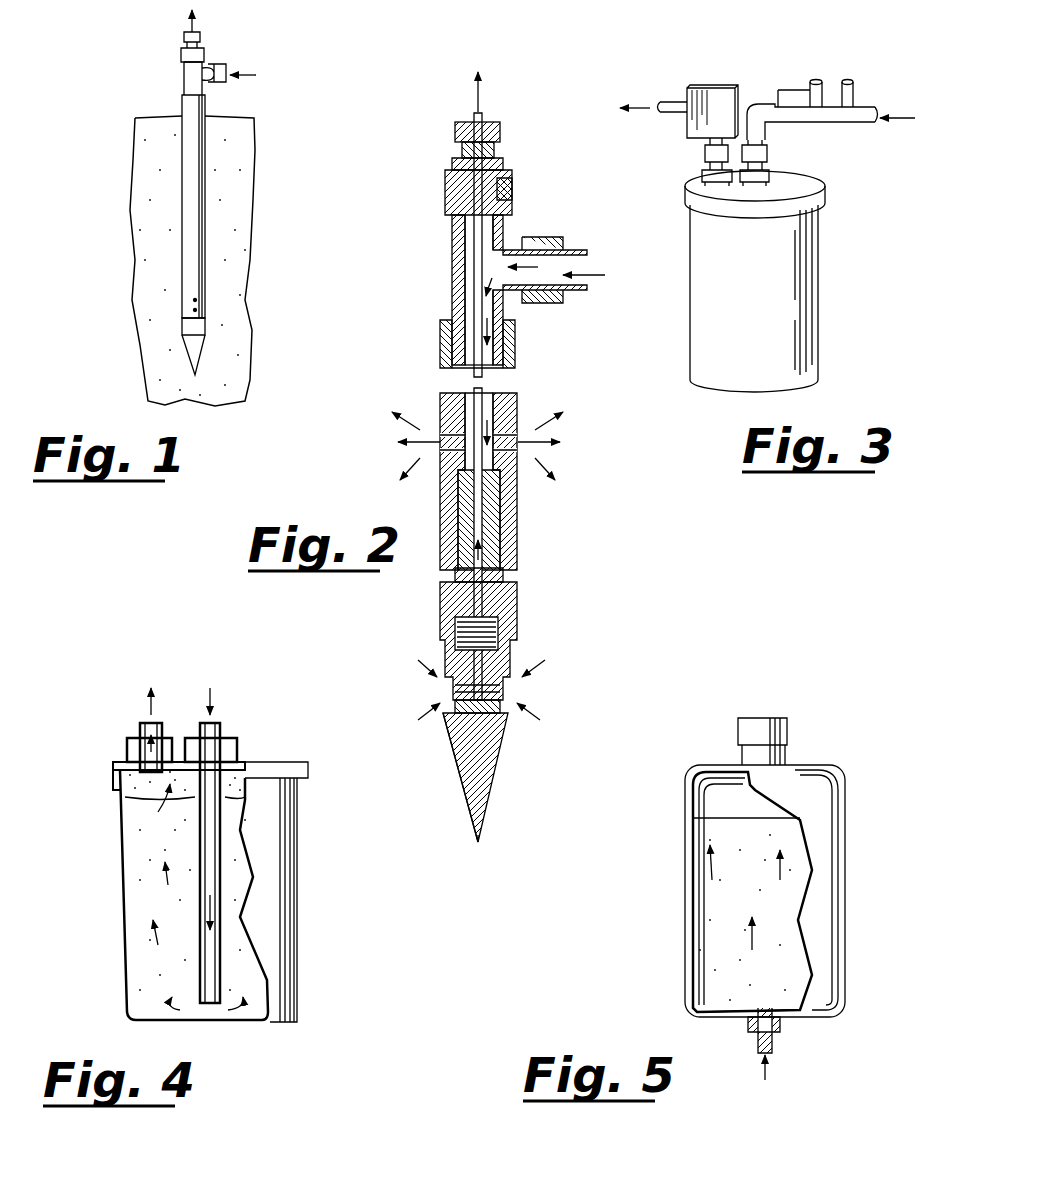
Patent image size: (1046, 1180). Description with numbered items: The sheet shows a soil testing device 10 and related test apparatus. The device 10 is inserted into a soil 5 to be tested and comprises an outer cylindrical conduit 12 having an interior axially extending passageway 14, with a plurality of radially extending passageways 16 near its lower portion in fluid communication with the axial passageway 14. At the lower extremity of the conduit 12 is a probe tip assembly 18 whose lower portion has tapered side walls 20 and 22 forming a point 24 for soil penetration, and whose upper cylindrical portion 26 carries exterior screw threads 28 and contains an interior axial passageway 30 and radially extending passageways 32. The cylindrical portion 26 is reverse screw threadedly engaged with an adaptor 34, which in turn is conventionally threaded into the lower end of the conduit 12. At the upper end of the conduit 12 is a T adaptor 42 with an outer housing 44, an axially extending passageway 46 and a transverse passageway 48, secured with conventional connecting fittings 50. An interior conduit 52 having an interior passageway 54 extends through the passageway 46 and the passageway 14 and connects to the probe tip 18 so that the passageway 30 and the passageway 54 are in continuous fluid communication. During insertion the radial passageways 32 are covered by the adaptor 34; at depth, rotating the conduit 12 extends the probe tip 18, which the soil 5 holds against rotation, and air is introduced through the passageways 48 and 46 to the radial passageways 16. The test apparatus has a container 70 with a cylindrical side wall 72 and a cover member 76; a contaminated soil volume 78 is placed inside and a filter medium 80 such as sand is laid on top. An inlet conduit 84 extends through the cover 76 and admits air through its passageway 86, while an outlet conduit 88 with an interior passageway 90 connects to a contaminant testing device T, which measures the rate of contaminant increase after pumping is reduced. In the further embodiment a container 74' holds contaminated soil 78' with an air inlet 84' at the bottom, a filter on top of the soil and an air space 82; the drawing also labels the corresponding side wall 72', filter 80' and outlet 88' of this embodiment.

In FIG. 1, the soil 5 is at (150, 228).
In FIG. 2, the device 10 is at (432, 128).
In FIG. 1, the outer cylindrical conduit 12 is at (200, 185).
In FIG. 2, the outer cylindrical conduit 12 is at (516, 334).
In FIG. 2, the interior axially extending passageway 14 is at (490, 405).
In FIG. 1, the radially extending passageways 16 is at (196, 305).
In FIG. 2, the radially extending passageways 16 is at (502, 440).
In FIG. 1, the probe tip assembly 18 is at (212, 352).
In FIG. 2, the probe tip assembly 18 is at (508, 768).
In FIG. 2, the tapered side wall 20 is at (495, 792).
In FIG. 2, the tapered side wall 22 is at (460, 778).
In FIG. 2, the point 24 is at (478, 845).
In FIG. 2, the upper cylindrical portion 26 is at (510, 657).
In FIG. 2, the exterior screw threads 28 is at (505, 688).
In FIG. 2, the interior axial passageway 30 is at (455, 662).
In FIG. 2, the radially extending passageways 32 is at (455, 688).
In FIG. 2, the adaptor 34 is at (520, 600).
In FIG. 2, the T adaptor 42 is at (432, 300).
In FIG. 2, the outer housing 44 is at (458, 308).
In FIG. 2, the axially extending passageway 46 is at (467, 265).
In FIG. 2, the transverse passageway 48 is at (592, 268).
In FIG. 2, the connecting fittings 50 is at (512, 178).
In FIG. 2, the interior conduit 52 is at (481, 115).
In FIG. 2, the interior passageway 54 is at (462, 225).
In FIG. 3, the testing device T is at (712, 95).
In FIG. 3, the container 70 is at (827, 268).
In FIG. 4, the cylindrical side wall 72 is at (162, 895).
In FIG. 5, the container body 72' is at (732, 891).
In FIG. 5, the container 74' is at (714, 1026).
In FIG. 4, the cover member 76 is at (310, 770).
In FIG. 4, the contaminated soil volume 78 is at (151, 914).
In FIG. 5, the contaminated soil 78' is at (705, 917).
In FIG. 4, the filter medium 80 is at (151, 792).
In FIG. 5, the filter layer 80' is at (709, 825).
In FIG. 5, the air space 82 is at (712, 795).
In FIG. 3, the inlet conduit 84 is at (831, 121).
In FIG. 4, the inlet conduit 84 is at (243, 832).
In FIG. 5, the air inlet 84' is at (817, 1044).
In FIG. 4, the passageway 86 is at (237, 748).
In FIG. 3, the outlet conduit 88 is at (702, 162).
In FIG. 4, the outlet conduit 88 is at (118, 734).
In FIG. 5, the outlet cap 88' is at (806, 726).
In FIG. 4, the interior passageway 90 is at (152, 728).